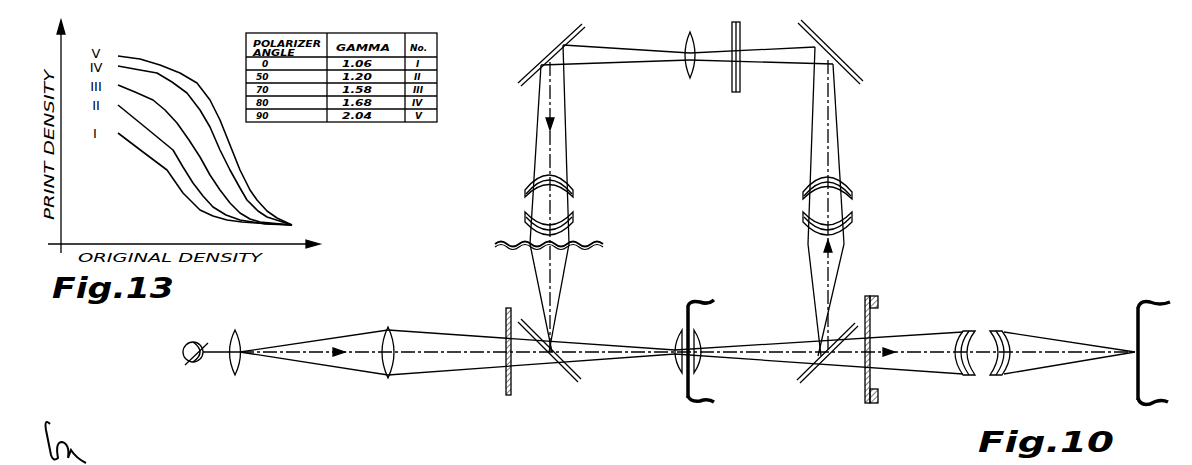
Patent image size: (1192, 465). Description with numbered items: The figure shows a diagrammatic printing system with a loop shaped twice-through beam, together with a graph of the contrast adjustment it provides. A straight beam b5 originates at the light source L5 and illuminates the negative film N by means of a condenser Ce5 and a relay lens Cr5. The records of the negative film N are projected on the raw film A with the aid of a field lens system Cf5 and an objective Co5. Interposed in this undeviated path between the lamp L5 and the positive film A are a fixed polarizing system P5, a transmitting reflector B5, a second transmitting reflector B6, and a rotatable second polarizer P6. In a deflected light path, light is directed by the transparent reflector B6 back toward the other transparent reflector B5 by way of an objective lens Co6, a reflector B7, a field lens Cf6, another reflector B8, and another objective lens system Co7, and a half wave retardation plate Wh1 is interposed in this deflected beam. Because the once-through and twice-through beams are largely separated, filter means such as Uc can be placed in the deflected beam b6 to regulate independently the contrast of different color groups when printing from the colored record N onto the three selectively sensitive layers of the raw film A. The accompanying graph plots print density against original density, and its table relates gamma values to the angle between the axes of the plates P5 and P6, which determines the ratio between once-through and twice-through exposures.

The light source L5 is at (201, 361).
The condenser Ce5 is at (239, 343).
The relay lens Cr5 is at (390, 338).
The polarizing system P5 is at (505, 372).
The transmitting reflector B5 is at (580, 370).
The field lens system Cf5 is at (672, 338).
The negative film N is at (690, 318).
The transmitting reflector B6 is at (803, 374).
The second polarizer P6 is at (878, 312).
The straight beam b5 is at (940, 352).
The objective Co5 is at (1025, 312).
The raw film A is at (1142, 336).
The reflector B8 is at (575, 32).
The field lens Cf6 is at (687, 68).
The filter means Uc is at (733, 92).
The reflector B7 is at (842, 62).
The deflected beam b6 is at (830, 127).
The objective lens system Co7 is at (525, 181).
The objective lens Co6 is at (852, 195).
The half wave retardation plate Wh1 is at (515, 243).